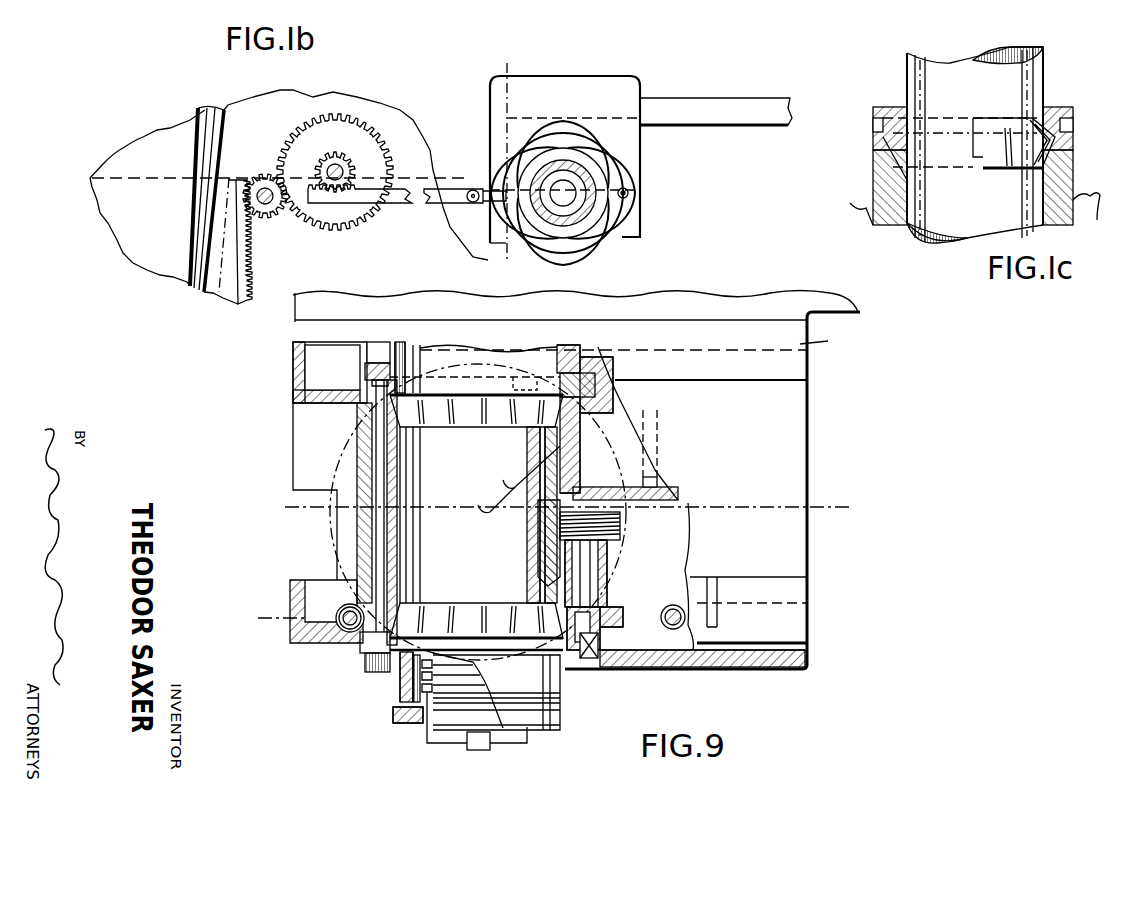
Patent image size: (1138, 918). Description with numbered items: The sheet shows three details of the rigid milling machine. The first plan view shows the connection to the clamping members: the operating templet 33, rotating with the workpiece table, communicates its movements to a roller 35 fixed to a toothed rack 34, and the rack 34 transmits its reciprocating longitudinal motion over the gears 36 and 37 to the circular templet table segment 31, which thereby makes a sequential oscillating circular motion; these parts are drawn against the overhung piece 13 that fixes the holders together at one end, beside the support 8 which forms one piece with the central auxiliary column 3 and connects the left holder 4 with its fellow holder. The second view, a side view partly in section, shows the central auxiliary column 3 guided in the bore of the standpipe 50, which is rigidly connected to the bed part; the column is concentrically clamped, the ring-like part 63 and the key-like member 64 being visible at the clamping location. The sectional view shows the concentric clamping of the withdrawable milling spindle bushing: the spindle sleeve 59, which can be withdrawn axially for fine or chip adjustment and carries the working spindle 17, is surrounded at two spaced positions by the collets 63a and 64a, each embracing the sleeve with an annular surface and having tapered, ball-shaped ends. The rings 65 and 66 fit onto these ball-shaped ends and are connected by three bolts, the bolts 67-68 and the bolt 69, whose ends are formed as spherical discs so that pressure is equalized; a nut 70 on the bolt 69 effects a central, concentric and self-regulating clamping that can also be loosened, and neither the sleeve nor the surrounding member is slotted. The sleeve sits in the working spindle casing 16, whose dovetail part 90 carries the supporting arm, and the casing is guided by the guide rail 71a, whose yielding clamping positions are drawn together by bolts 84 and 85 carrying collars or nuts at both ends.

In FIG. 1B, the central auxiliary column 3 is at (563, 162).
In FIG. 1C, the central auxiliary column 3 is at (1007, 82).
In FIG. 1B, the left holder 4 is at (712, 114).
In FIG. 1B, the support 8 is at (628, 143).
In FIG. 1B, the overhung piece 13 is at (477, 228).
In FIG. 9, the working spindle casing 16 is at (790, 418).
In FIG. 9, the working spindle 17 is at (507, 732).
In FIG. 1B, the circular templet table segment 31 is at (246, 233).
In FIG. 1B, the operating templet 33 is at (602, 243).
In FIG. 1B, the toothed rack 34 is at (420, 197).
In FIG. 1B, the roller 35 is at (470, 190).
In FIG. 1B, the gear 36 is at (342, 160).
In FIG. 1B, the gear 37 is at (263, 184).
In FIG. 1C, the standpipe 50 is at (1075, 164).
In FIG. 9, the spindle sleeve 59 is at (407, 685).
In FIG. 1C, the ring 63 is at (1073, 117).
In FIG. 9, the collet 63a is at (458, 420).
In FIG. 1C, the key 64 is at (883, 137).
In FIG. 9, the collet 64a is at (493, 622).
In FIG. 9, the ring 65 is at (593, 398).
In FIG. 9, the ring 66 is at (575, 655).
In FIG. 9, the bolts 67-68 is at (535, 552).
In FIG. 9, the bolt 69 is at (365, 455).
In FIG. 9, the nut 70 is at (375, 668).
In FIG. 9, the guide rail 71a is at (793, 621).
In FIG. 9, the bolt 84 is at (315, 644).
In FIG. 9, the bolt 85 is at (672, 632).
In FIG. 9, the dovetail part 90 is at (750, 668).